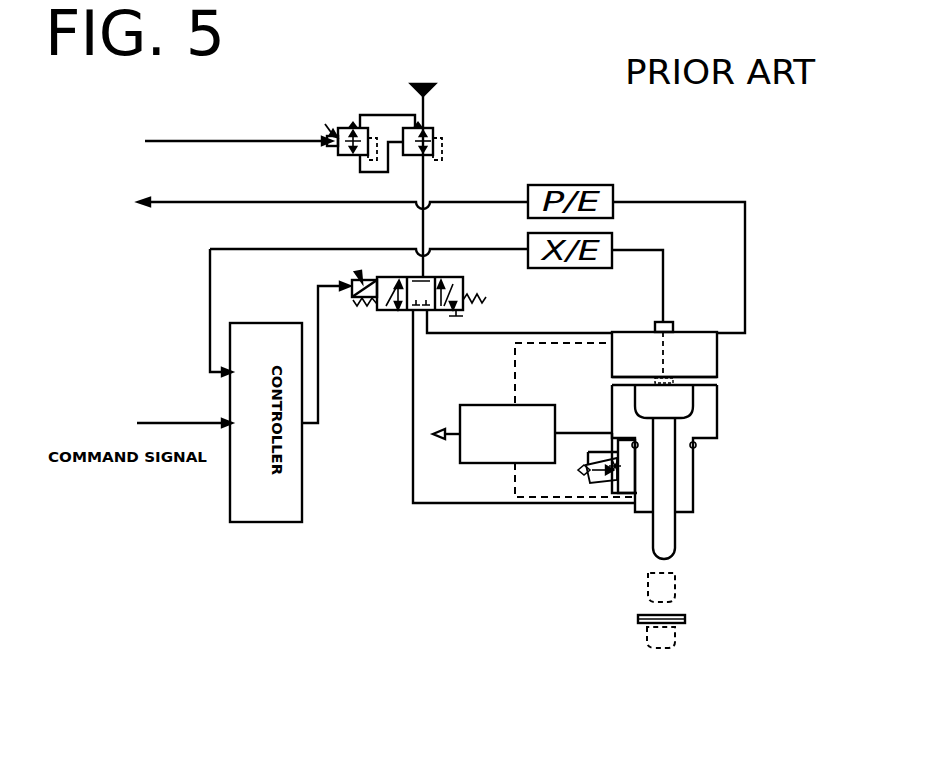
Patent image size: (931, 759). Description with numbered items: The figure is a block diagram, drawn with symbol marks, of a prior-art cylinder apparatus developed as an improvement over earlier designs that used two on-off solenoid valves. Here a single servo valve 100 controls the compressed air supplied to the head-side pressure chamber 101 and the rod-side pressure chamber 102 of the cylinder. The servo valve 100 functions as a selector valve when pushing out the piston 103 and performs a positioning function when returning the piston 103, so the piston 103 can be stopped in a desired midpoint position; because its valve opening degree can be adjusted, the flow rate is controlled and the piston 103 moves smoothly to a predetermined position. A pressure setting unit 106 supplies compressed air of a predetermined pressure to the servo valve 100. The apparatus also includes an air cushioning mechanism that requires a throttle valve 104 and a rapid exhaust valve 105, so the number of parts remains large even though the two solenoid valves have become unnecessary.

The servo valve 100 is at (388, 313).
The head-side pressure chamber 101 is at (712, 357).
The rod-side pressure chamber 102 is at (710, 425).
The piston 103 is at (718, 380).
The throttle valve 104 is at (597, 483).
The rapid exhaust valve 105 is at (485, 404).
The pressure setting unit 106 is at (453, 134).